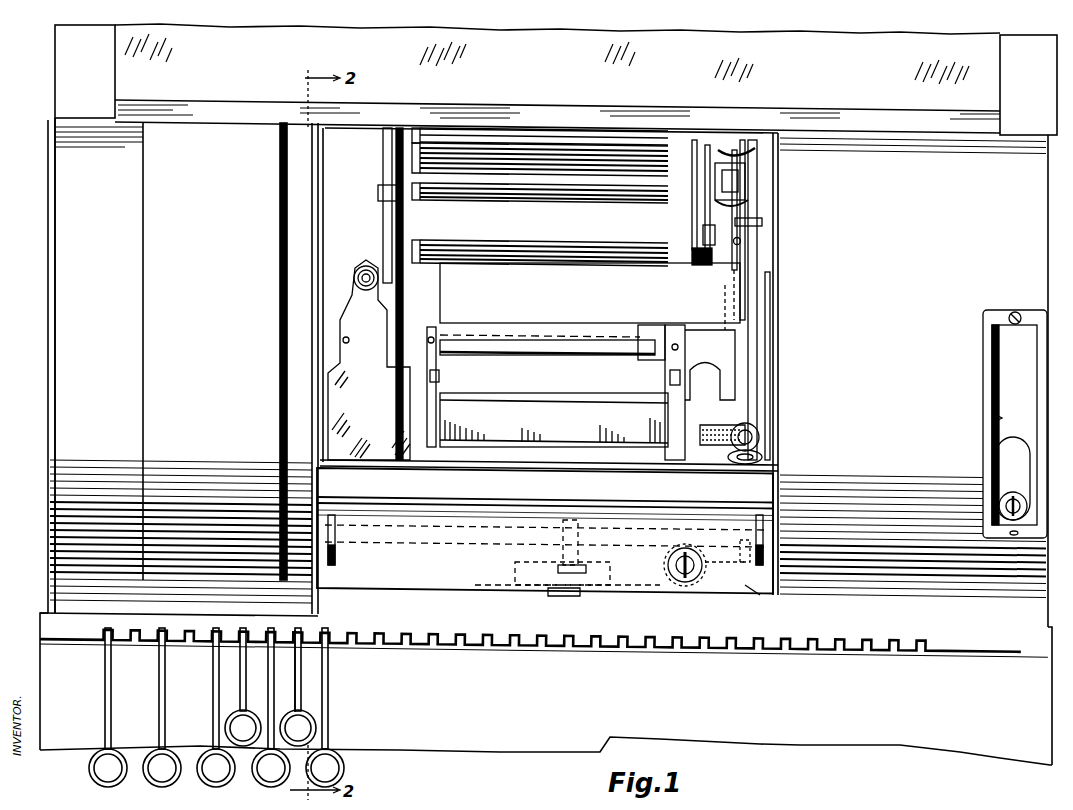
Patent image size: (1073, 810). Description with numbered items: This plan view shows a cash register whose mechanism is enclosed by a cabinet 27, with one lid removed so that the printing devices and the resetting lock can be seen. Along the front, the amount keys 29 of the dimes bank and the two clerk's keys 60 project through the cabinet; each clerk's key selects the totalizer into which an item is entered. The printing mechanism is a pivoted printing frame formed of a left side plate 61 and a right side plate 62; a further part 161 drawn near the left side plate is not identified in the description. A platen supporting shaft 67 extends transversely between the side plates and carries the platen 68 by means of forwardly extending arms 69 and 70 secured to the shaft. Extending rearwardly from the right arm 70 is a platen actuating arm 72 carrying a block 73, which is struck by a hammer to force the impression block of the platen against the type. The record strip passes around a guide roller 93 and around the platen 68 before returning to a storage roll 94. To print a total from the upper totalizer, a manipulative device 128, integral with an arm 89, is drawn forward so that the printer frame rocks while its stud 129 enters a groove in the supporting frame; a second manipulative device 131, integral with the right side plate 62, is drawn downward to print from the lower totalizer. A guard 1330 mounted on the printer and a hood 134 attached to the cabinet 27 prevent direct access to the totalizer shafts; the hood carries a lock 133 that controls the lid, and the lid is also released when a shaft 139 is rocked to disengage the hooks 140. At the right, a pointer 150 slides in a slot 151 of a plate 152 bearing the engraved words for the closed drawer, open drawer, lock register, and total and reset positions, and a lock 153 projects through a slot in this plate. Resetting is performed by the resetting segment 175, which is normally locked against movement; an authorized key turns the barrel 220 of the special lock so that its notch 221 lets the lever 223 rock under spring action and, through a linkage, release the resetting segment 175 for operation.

The cabinet 27 is at (60, 262).
The lever 161 is at (383, 160).
The printer side plate 61 is at (394, 246).
The storage roll 94 is at (603, 160).
The guide roller 93 is at (580, 200).
The platen supporting shaft 67 is at (653, 330).
The right platen arm 70 is at (668, 396).
The platen arm 69 is at (432, 398).
The platen 68 is at (554, 420).
The guard 1330 is at (369, 360).
The stud 129 is at (705, 232).
The manipulative device 128 is at (750, 195).
The resetting segment 175 is at (698, 142).
The manipulative device 131 is at (748, 150).
The block 73 is at (762, 222).
The platen actuating arm 72 is at (742, 243).
The printer side plate 62 is at (758, 265).
The arm 89 is at (731, 374).
The hood 134 is at (436, 589).
The shaft 139 is at (635, 527).
The hooks 140 is at (337, 550).
The lock 133 is at (560, 596).
The bolt 220 is at (678, 585).
The notch 221 is at (705, 565).
The lever 223 is at (745, 568).
The slot 151 is at (992, 358).
The plate 152 is at (1008, 318).
The pointer 150 is at (993, 418).
The lock 153 is at (1004, 495).
The clerk's keys 60 is at (205, 755).
The amount keys 29 is at (300, 698).